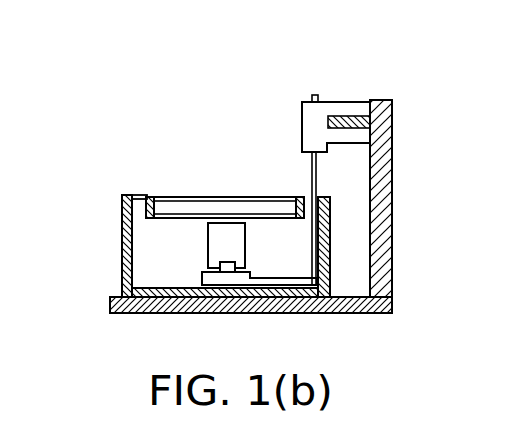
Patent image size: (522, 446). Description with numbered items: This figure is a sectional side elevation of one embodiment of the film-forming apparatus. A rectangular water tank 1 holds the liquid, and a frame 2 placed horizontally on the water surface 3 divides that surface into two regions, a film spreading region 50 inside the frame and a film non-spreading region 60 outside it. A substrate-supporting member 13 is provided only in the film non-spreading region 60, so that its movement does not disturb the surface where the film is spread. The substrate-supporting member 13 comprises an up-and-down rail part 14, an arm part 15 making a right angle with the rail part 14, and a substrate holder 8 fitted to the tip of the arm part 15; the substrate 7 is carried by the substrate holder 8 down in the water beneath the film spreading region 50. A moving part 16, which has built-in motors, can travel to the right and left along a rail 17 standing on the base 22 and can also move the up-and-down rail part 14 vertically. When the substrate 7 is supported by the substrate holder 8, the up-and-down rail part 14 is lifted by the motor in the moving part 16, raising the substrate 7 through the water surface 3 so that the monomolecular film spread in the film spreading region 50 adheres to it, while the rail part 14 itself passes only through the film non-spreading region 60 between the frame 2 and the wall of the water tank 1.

The water tank 1 is at (122, 238).
The frame 2 is at (140, 195).
The water surface 3 is at (229, 197).
The substrate 7 is at (215, 232).
The substrate holder 8 is at (220, 268).
The substrate-supporting member 13 is at (322, 183).
The up-and-down rail part 14 is at (311, 175).
The arm part 15 is at (272, 278).
The moving part 16 is at (327, 102).
The rail 17 is at (372, 100).
The base 22 is at (392, 302).
The film spreading region 50 is at (155, 197).
The film non-spreading region 60 is at (123, 194).